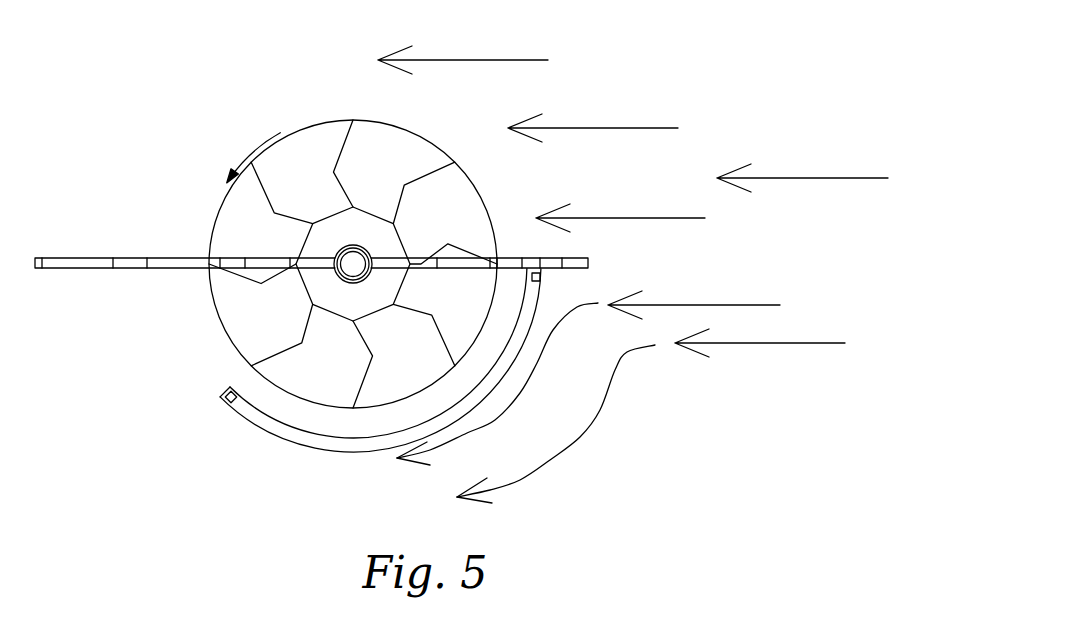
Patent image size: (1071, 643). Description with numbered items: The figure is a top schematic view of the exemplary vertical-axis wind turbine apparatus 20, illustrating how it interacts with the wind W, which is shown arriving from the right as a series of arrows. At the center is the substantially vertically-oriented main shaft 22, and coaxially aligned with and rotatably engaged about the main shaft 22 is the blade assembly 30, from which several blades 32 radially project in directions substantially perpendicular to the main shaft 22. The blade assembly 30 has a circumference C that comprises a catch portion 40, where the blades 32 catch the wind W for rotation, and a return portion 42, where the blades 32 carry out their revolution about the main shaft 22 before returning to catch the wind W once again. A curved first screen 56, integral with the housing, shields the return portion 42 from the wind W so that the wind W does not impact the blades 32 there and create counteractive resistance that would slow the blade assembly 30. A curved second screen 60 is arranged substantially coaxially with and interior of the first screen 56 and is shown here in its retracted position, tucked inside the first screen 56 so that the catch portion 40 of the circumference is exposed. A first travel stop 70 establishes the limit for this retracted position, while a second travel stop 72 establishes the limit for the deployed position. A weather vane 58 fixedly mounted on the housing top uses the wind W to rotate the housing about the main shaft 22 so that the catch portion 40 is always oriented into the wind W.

The vertical-axis wind turbine apparatus 20 is at (139, 79).
The main shaft 22 is at (353, 262).
The blade assembly 30 is at (305, 121).
The blade 32 is at (395, 150).
The catch portion 40 is at (206, 233).
The return portion 42 is at (222, 347).
The first screen 56 is at (347, 452).
The weather vane 58 is at (72, 258).
The second screen 60 is at (302, 432).
The first travel stop 70 is at (227, 405).
The second travel stop 72 is at (543, 277).
The circumference C is at (210, 300).
The wind W is at (625, 128).